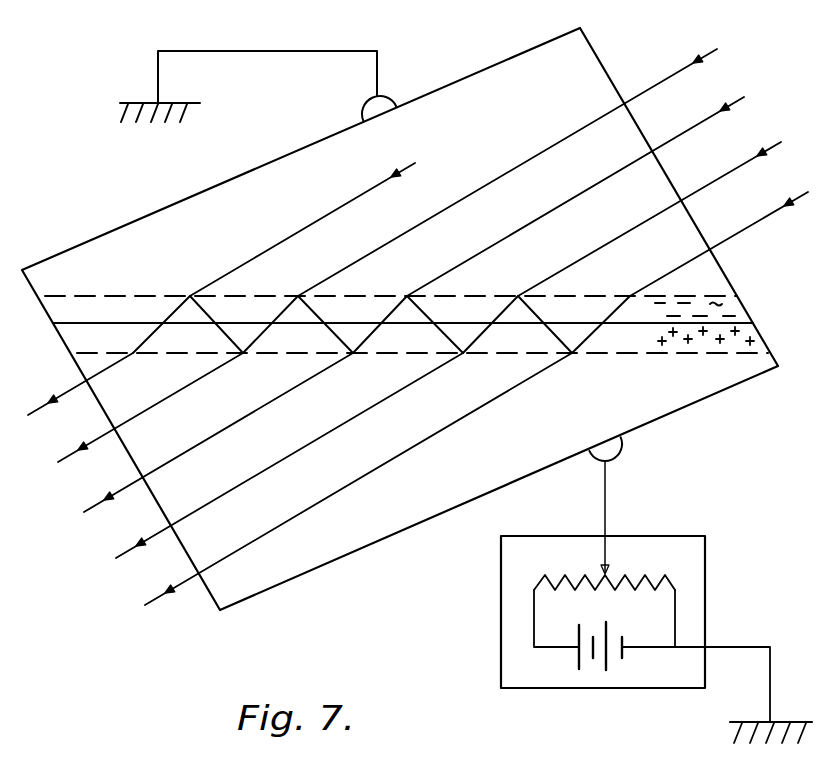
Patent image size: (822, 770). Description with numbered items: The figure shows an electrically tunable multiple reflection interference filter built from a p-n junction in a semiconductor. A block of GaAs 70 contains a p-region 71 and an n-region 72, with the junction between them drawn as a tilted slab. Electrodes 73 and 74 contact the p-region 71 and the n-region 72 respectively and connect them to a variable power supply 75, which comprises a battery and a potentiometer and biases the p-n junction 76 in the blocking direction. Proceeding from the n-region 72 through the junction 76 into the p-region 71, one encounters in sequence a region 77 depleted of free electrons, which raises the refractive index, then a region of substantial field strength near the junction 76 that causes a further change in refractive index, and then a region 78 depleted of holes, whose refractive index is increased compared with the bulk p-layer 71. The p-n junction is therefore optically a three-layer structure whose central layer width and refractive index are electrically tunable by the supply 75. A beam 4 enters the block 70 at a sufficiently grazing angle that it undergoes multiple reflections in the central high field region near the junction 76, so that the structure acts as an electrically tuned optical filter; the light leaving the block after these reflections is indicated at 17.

The block of GaAs 70 is at (148, 199).
The p-region 71 is at (230, 216).
The n-region 72 is at (455, 448).
The electrode 73 is at (393, 92).
The electrode 74 is at (624, 452).
The variable power supply 75 is at (705, 562).
The p-n junction 76 is at (46, 326).
The region depleted of free electrons 77 is at (755, 327).
The region depleted of holes 78 is at (741, 295).
The beam 4 is at (721, 35).
The emerging light beam 17 is at (16, 417).